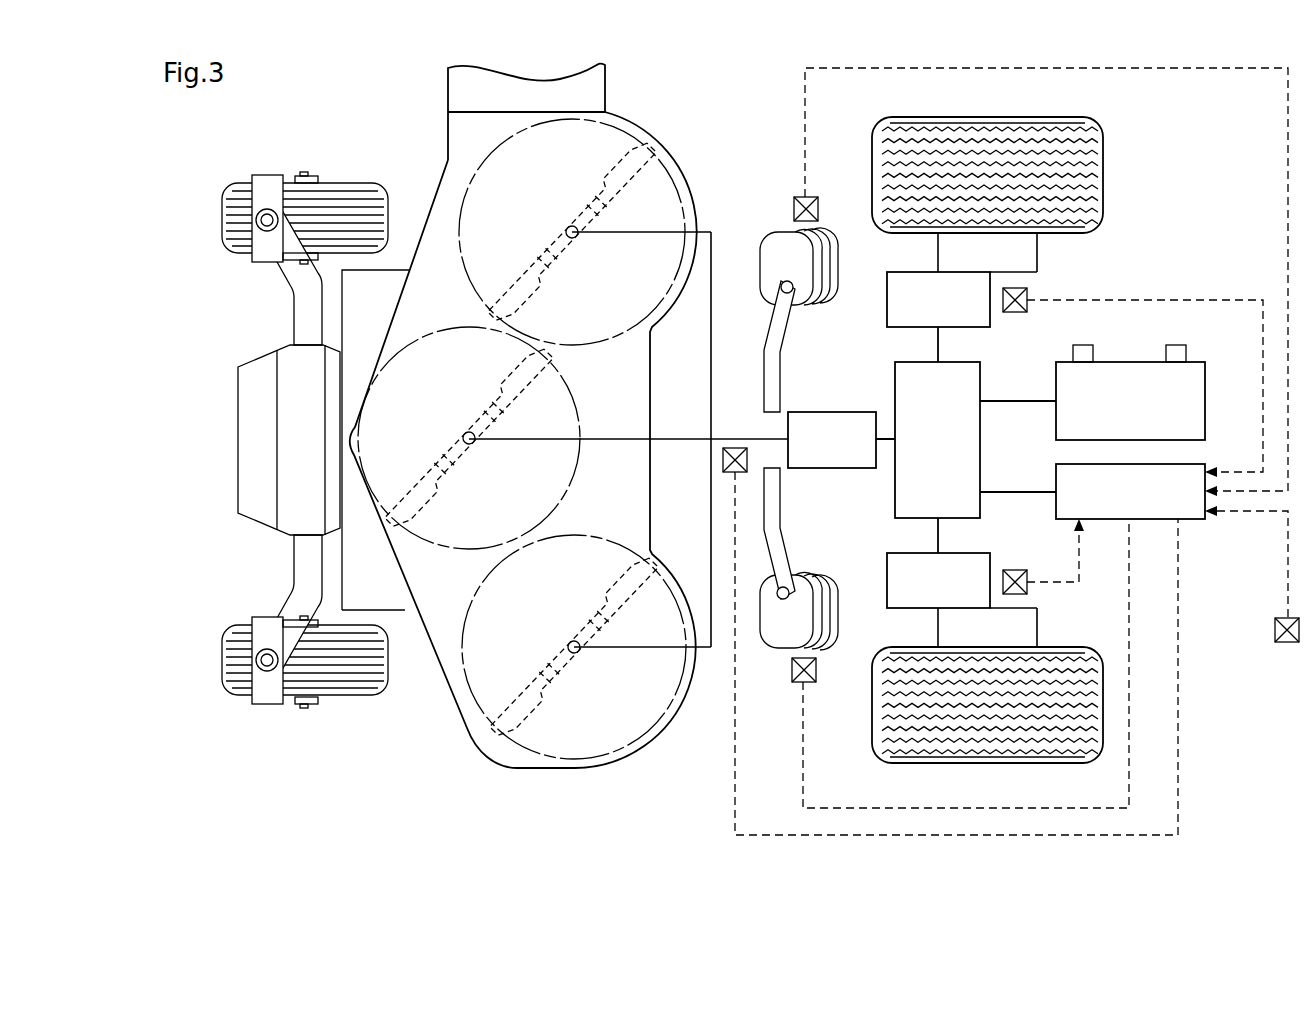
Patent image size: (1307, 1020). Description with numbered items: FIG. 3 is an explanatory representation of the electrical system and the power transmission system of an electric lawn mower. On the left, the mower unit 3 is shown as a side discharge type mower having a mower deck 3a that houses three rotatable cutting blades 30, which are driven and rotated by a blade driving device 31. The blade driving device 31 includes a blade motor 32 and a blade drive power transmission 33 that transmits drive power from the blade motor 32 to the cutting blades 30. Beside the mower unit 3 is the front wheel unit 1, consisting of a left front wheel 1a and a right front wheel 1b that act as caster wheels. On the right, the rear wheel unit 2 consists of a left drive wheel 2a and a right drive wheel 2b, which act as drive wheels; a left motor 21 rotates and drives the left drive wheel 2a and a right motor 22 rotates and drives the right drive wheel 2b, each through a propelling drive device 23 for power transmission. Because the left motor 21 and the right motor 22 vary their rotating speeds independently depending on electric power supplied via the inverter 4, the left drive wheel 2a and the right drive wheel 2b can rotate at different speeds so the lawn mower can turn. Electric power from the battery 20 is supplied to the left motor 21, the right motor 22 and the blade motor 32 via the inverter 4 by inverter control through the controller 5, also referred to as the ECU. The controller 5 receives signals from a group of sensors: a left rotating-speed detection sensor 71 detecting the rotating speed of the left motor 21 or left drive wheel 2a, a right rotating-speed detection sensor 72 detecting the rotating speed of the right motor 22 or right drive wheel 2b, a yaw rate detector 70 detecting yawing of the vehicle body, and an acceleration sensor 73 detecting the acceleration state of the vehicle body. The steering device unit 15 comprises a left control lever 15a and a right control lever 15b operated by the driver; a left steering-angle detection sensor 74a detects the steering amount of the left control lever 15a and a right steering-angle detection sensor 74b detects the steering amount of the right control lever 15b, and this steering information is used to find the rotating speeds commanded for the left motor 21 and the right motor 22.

The front wheel unit 1 is at (265, 441).
The left front wheel 1a is at (235, 697).
The right front wheel 1b is at (224, 205).
The rear wheel unit 2 is at (1030, 463).
The left drive wheel 2a is at (975, 762).
The right drive wheel 2b is at (1103, 178).
The mower unit 3 is at (412, 176).
The mower deck 3a is at (452, 673).
The inverter 4 is at (982, 373).
The controller 5 is at (1185, 519).
The steering device unit 15 is at (822, 439).
The left control lever 15a is at (773, 520).
The right control lever 15b is at (776, 334).
The battery 20 is at (1205, 413).
The left motor 21 is at (887, 584).
The right motor 22 is at (887, 298).
The propelling drive device 23 is at (938, 254).
The cutting blade 30 is at (542, 248).
The blade driving device 31 is at (662, 220).
The blade motor 32 is at (832, 468).
The blade drive power transmission 33 is at (625, 236).
The yaw rate detector 70 is at (735, 448).
The left rotating-speed detection sensor 71 is at (1015, 570).
The right rotating-speed detection sensor 72 is at (1027, 288).
The acceleration sensor 73 is at (1287, 642).
The left steering-angle detection sensor 74a is at (792, 668).
The right steering-angle detection sensor 74b is at (794, 213).